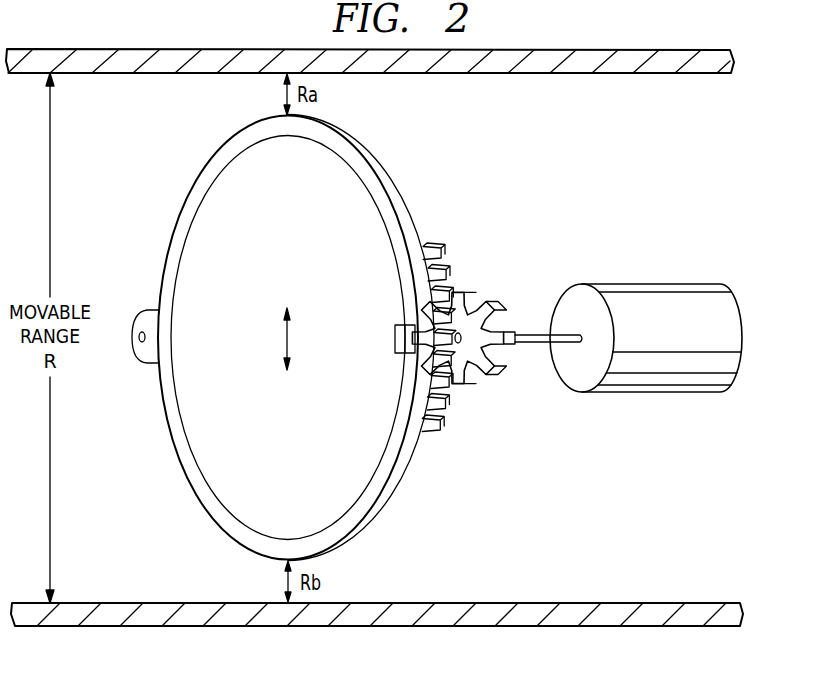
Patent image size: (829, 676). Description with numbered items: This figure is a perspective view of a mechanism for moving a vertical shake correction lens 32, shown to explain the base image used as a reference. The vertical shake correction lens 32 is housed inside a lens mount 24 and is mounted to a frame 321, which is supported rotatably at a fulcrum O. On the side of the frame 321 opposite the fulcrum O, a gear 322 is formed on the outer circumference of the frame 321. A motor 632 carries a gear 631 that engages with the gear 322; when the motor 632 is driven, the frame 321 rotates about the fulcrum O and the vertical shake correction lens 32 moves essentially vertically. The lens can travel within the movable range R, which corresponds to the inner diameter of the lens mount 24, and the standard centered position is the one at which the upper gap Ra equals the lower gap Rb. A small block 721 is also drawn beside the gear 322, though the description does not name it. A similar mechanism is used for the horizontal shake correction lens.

The lens mount 24 is at (530, 75).
The vertical shake correction lens 32 is at (200, 445).
The frame 321 is at (232, 526).
The gear 322 is at (431, 436).
The fulcrum O is at (137, 335).
The guide block 721 is at (395, 338).
The gear 631 is at (490, 380).
The motor 632 is at (645, 285).